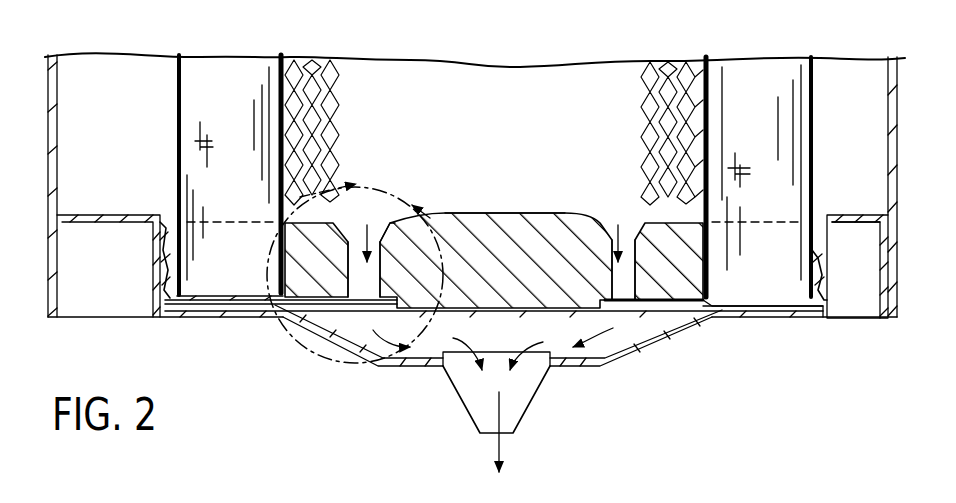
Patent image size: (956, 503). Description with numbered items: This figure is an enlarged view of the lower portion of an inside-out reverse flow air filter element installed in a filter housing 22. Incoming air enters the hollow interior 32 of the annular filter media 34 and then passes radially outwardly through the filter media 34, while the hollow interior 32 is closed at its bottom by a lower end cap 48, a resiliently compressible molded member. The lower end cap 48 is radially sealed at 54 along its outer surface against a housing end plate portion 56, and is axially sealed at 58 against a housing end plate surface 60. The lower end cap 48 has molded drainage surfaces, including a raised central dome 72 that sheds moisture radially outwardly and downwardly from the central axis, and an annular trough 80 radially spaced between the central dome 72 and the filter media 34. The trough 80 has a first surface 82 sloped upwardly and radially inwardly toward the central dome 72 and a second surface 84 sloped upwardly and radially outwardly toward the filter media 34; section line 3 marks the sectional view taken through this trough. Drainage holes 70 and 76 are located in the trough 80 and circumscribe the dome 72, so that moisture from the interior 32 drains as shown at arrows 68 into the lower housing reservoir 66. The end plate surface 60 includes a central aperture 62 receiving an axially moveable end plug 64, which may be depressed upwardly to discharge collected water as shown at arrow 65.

The filter housing 22 is at (49, 78).
The annular filter media 34 is at (243, 70).
The hollow interior 32 is at (515, 110).
The section line 3- 3 is at (355, 260).
The first surface 82 is at (386, 226).
The raised central dome 72 is at (494, 212).
The lower end cap 48 is at (547, 211).
The annular trough 80 is at (367, 224).
The second surface 84 is at (324, 222).
The drainage hole 70 is at (357, 255).
The drainage hole 76 is at (632, 255).
The housing end plate portion 56 is at (837, 246).
The radial seal 54 is at (820, 257).
The axial seal 58 is at (762, 308).
The housing end plate surface 60 is at (808, 318).
The lower housing reservoir 66 is at (425, 352).
The drainage flow arrows 68 is at (605, 337).
The central aperture 62 is at (546, 372).
The end plug 64 is at (518, 405).
The water discharge arrow 65 is at (502, 443).